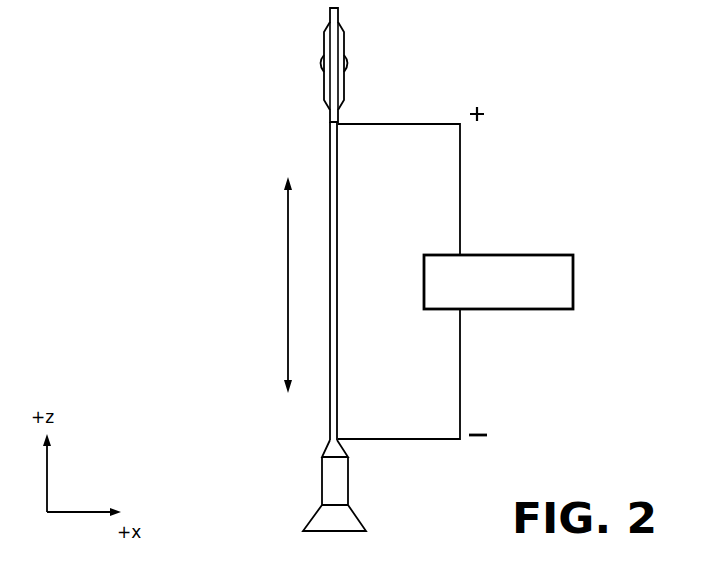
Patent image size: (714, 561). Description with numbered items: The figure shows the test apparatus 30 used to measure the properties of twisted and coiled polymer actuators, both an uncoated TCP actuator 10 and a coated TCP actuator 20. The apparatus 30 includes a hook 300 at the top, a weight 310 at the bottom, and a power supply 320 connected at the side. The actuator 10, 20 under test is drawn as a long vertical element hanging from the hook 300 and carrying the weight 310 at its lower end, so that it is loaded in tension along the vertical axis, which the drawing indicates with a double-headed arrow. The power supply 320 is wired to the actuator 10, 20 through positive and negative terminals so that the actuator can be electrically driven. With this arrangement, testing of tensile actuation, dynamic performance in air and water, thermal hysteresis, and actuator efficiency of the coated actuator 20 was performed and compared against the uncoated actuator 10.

The test apparatus 30 is at (562, 81).
The hook 300 is at (346, 51).
The uncoated TCP actuator 10 is at (270, 281).
The coated TCP actuator 20 is at (330, 172).
The power supply 320 is at (532, 255).
The weight 310 is at (328, 486).